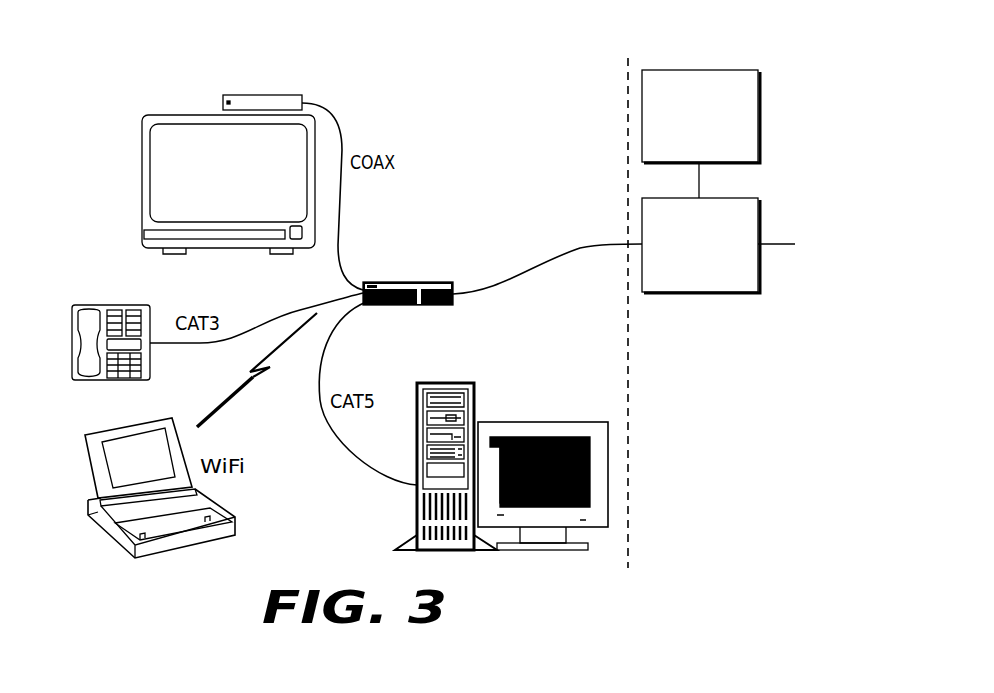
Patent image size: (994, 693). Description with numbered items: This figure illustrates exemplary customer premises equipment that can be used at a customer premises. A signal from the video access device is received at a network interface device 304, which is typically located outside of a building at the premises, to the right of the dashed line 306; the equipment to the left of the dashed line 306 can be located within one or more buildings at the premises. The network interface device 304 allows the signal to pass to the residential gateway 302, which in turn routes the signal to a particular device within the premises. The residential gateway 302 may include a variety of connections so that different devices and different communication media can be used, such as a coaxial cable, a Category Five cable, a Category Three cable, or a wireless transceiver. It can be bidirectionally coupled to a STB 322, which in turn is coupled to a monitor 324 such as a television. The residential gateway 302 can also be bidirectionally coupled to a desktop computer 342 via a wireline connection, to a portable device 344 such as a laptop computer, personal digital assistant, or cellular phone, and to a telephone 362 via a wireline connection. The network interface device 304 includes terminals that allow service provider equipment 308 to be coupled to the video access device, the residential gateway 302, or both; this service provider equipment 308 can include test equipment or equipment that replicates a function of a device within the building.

The residential gateway 302 is at (438, 263).
The network interface device 304 is at (745, 198).
The dashed line 306 is at (652, 361).
The service provider equipment 308 is at (745, 70).
The STB 322 is at (223, 98).
The monitor 324 is at (142, 120).
The desktop computer 342 is at (578, 422).
The portable device 344 is at (85, 435).
The telephone 362 is at (72, 310).